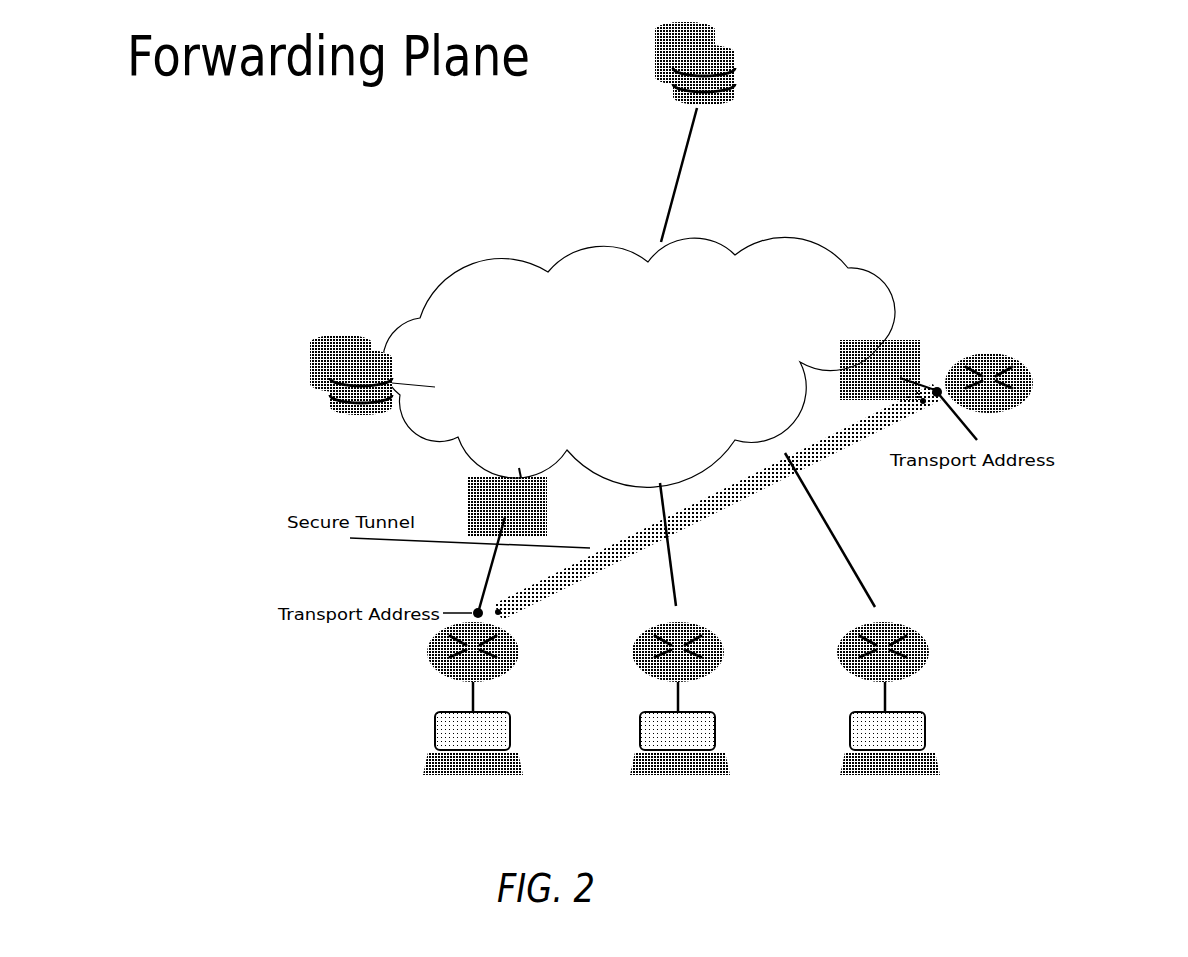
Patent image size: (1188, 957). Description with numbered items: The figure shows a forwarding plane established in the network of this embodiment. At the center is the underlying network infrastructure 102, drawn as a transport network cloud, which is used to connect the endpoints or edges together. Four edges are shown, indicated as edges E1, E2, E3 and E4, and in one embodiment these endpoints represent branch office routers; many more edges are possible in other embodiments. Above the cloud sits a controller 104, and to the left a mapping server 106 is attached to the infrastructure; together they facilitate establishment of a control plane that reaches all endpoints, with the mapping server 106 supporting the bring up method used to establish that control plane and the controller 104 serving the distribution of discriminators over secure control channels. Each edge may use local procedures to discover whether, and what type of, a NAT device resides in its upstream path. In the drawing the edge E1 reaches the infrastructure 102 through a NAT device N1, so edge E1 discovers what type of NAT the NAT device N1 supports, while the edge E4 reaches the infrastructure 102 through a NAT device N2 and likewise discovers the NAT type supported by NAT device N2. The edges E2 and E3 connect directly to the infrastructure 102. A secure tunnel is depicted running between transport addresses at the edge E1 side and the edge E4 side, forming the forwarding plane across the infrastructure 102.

The underlying network infrastructure 102 is at (840, 253).
The controller 104 is at (738, 74).
The mapping server 106 is at (330, 340).
The NAT device N1 is at (467, 505).
The NAT device N2 is at (907, 350).
The edge E1 is at (427, 665).
The edge E2 is at (635, 665).
The edge E3 is at (928, 662).
The edge E4 is at (1035, 390).